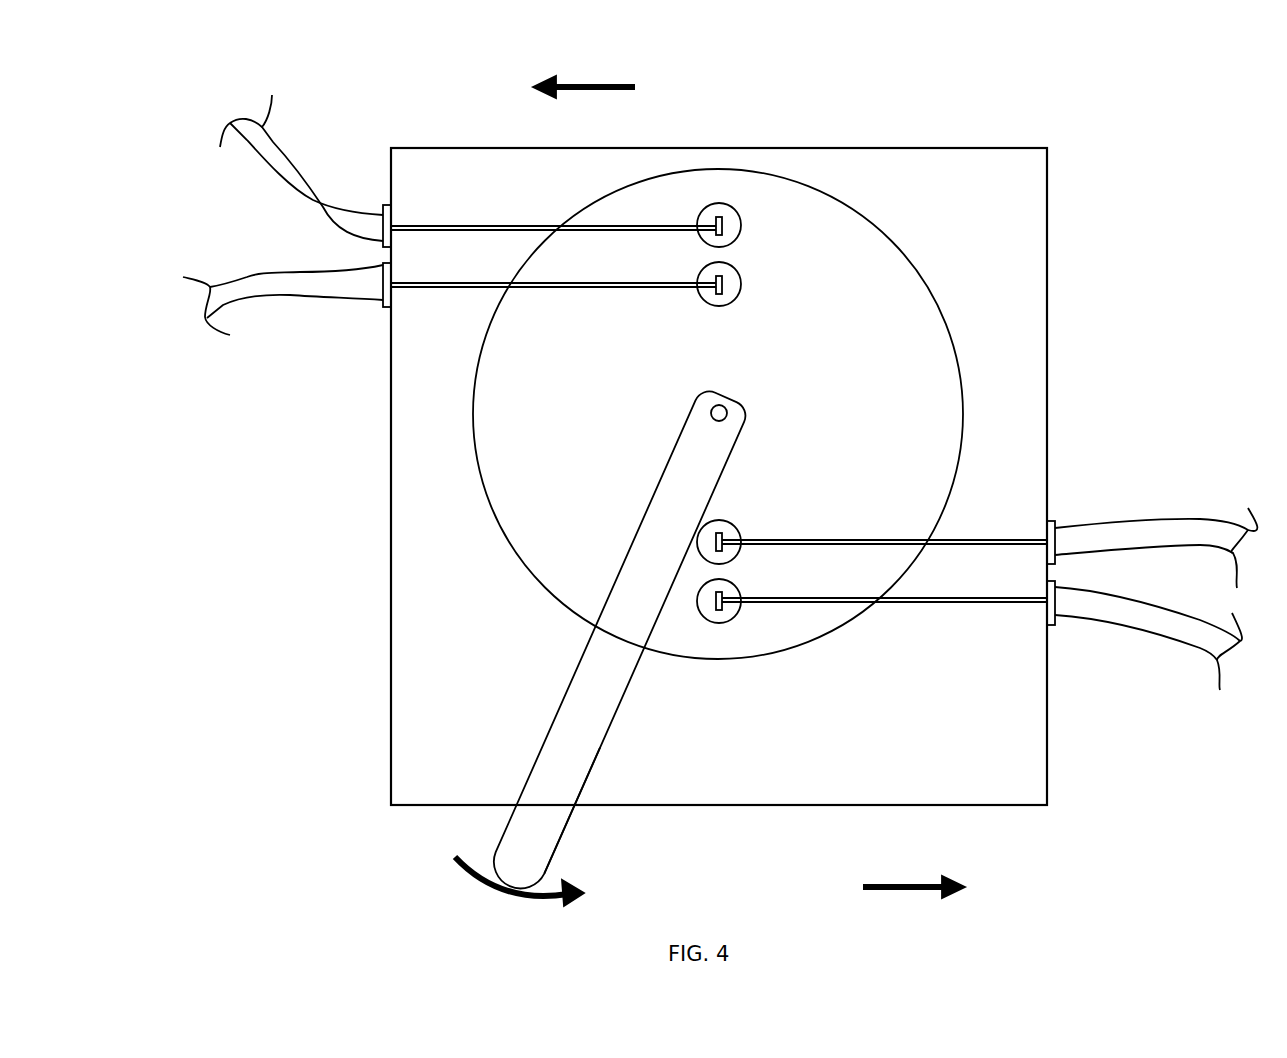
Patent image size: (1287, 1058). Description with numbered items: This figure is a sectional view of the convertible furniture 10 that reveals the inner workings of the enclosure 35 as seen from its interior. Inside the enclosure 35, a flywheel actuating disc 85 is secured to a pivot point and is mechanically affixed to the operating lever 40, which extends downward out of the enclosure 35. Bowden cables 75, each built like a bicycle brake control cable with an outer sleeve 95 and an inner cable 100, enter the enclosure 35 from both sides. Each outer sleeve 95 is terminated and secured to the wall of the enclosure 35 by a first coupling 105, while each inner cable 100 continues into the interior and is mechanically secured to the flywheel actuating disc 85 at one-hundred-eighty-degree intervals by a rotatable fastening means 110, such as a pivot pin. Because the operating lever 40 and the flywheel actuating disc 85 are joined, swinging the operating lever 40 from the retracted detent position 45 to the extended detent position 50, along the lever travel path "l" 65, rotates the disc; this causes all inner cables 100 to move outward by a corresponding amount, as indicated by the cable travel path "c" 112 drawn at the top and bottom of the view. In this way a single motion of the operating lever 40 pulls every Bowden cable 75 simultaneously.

The convertible furniture 10 is at (222, 206).
The enclosure 35 is at (875, 148).
The operating lever 40 is at (523, 857).
The retracted detent position 45 is at (583, 806).
The extended detent position 50 is at (950, 806).
The lever travel path 65 is at (450, 912).
The Bowden cables 75 is at (310, 188).
The flywheel actuating disc 85 is at (791, 243).
The outer sleeve 95 is at (720, 392).
The inner cable 100 is at (483, 228).
The first couplings 105 is at (386, 218).
The rotatable fastening means 110 is at (718, 216).
The cable travel path 112 is at (605, 73).